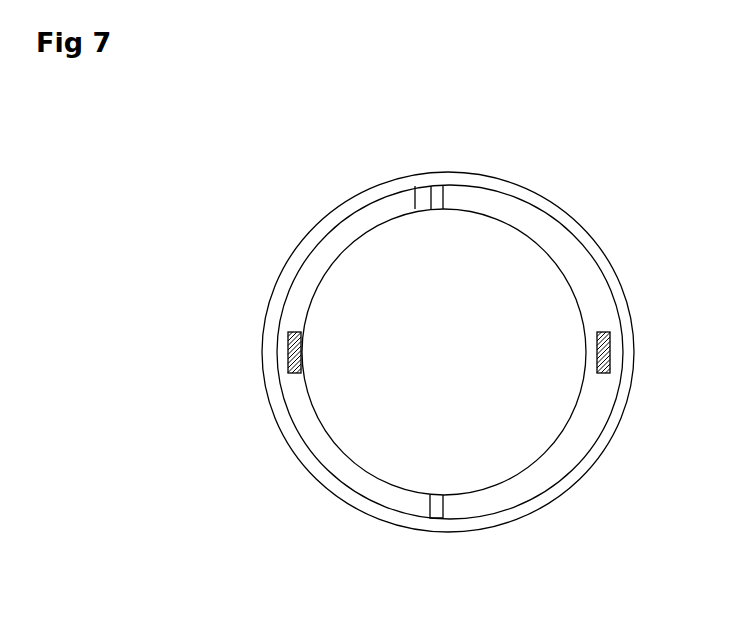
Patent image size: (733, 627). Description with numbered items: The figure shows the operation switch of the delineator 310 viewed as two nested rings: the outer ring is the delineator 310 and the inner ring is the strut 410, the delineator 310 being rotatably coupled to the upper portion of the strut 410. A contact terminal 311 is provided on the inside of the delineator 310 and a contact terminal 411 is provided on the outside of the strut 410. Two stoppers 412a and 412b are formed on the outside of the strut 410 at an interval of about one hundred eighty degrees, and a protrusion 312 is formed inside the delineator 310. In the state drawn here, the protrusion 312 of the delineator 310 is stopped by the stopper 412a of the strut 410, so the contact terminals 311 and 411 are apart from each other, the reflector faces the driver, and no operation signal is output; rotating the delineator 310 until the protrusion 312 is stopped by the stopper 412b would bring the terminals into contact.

The delineator 310 is at (533, 193).
The contact terminal 311 is at (608, 334).
The protrusion 312 is at (441, 194).
The strut 410 is at (533, 468).
The contact terminal 411 is at (289, 334).
The stopper 412a is at (414, 201).
The stopper 412b is at (428, 506).